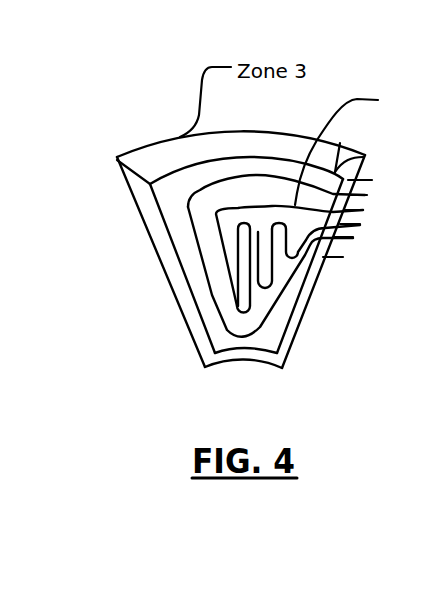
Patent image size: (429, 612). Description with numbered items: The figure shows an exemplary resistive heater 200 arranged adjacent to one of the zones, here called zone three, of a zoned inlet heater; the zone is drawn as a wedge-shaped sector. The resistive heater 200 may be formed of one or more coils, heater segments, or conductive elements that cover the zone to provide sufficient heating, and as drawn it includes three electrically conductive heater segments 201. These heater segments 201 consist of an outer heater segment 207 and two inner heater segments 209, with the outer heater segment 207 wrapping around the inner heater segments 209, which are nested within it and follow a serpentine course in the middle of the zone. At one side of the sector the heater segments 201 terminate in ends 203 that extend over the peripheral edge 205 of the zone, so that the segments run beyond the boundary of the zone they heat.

The resistive heater 200 is at (122, 175).
The heater segments 201 is at (340, 143).
The ends 203 is at (367, 180).
The peripheral edge 205 is at (302, 323).
The outer heater segment 207 is at (184, 274).
The inner heater segments 209 is at (227, 262).